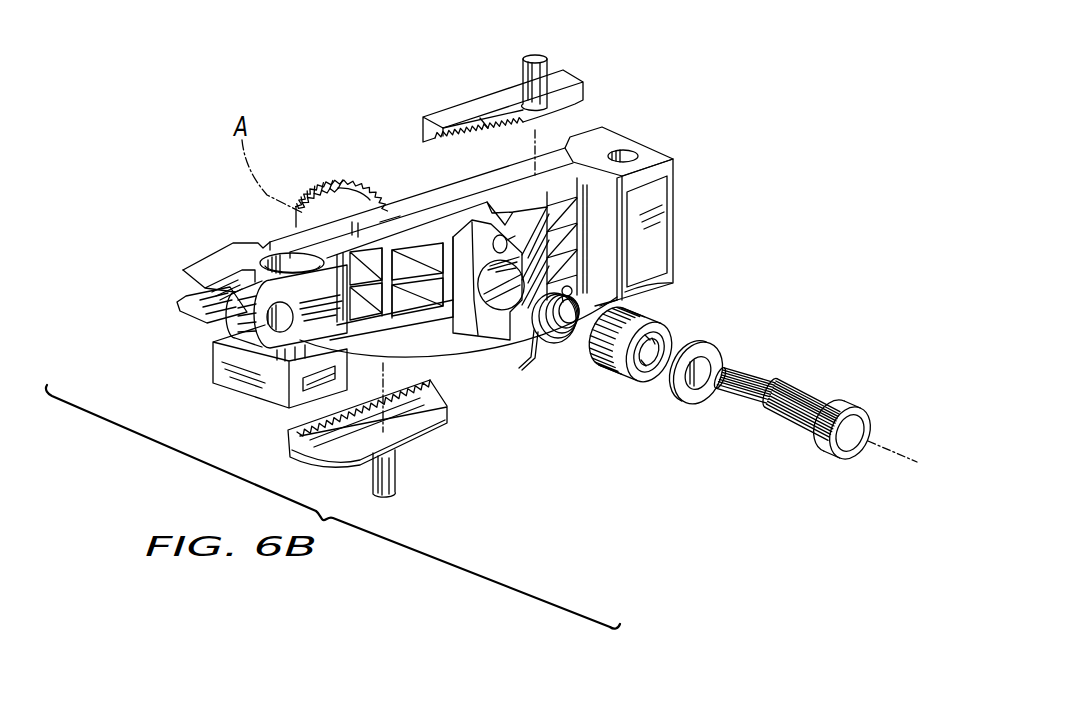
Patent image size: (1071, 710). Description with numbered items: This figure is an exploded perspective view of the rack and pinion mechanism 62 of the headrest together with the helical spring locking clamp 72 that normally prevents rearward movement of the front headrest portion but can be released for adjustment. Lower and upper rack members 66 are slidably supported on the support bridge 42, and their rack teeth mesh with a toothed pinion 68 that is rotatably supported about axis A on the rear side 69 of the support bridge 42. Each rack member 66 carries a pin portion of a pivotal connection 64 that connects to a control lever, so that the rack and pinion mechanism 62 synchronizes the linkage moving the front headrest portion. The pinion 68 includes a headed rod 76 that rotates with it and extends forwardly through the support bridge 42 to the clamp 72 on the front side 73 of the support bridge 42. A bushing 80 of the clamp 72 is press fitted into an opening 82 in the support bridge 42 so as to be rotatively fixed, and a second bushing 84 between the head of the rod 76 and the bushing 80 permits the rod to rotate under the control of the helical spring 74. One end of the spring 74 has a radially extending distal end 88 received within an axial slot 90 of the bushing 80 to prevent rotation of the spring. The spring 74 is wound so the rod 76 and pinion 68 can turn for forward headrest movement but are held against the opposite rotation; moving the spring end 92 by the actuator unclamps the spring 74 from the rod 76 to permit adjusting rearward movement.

The support bridge 42 is at (414, 188).
The rack and pinion mechanism 62 is at (588, 445).
The pivotal connections 64 is at (551, 63).
The rack members 66 is at (472, 112).
The pinion 68 is at (346, 200).
The rear side 69 is at (393, 215).
The second helical spring locking clamp 72 is at (560, 354).
The front side 73 is at (515, 248).
The helical spring 74 is at (546, 336).
The headed rod 76 is at (813, 397).
The bushing 80 is at (661, 317).
The opening 82 is at (500, 288).
The bushing 84 is at (721, 352).
The radially extending distal end 88 is at (566, 297).
The axial slot 90 is at (617, 299).
The end of helical spring 92 is at (530, 370).